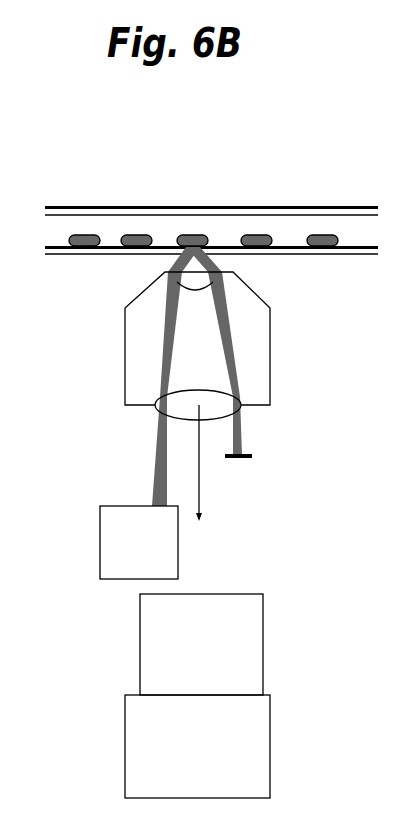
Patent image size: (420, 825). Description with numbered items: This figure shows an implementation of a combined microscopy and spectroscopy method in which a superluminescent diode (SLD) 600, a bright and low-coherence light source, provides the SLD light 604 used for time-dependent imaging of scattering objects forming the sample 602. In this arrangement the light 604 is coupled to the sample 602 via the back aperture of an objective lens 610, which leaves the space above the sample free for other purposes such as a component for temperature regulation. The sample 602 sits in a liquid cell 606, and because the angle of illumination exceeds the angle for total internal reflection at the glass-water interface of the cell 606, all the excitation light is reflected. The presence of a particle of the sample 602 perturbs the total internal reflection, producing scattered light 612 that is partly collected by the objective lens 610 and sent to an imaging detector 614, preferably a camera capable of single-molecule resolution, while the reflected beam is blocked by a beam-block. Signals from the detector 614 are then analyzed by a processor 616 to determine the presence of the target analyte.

The superluminescent diode (SLD) 600 is at (153, 541).
The sample 602 is at (193, 240).
The SLD light 604 is at (150, 455).
The liquid cell 606 is at (80, 257).
The objective lens 610 is at (192, 281).
The scattered light 612 is at (199, 475).
The imaging detector 614 is at (192, 628).
The processor 616 is at (177, 730).